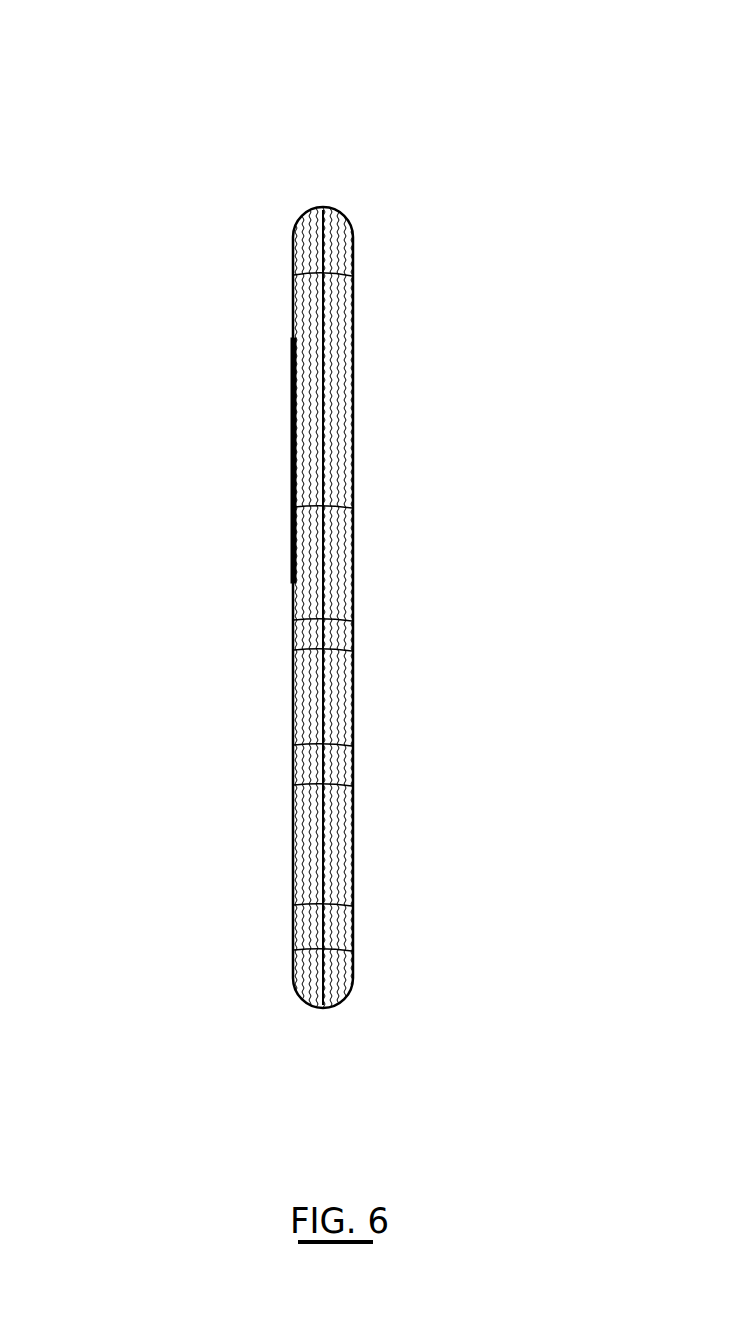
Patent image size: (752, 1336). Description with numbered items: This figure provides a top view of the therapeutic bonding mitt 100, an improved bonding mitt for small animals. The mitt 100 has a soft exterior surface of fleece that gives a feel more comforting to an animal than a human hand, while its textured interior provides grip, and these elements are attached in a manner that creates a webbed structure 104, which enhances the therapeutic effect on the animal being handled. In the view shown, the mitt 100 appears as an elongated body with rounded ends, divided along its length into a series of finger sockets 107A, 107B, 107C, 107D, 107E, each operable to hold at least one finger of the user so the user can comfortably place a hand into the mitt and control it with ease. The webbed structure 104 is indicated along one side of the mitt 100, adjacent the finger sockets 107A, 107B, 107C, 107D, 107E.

The therapeutic bonding mitt 100 is at (493, 150).
The webbed structure 104 is at (343, 455).
The finger socket 107A is at (297, 235).
The finger socket 107B is at (343, 590).
The finger socket 107C is at (340, 705).
The finger socket 107D is at (337, 868).
The finger socket 107E is at (297, 967).